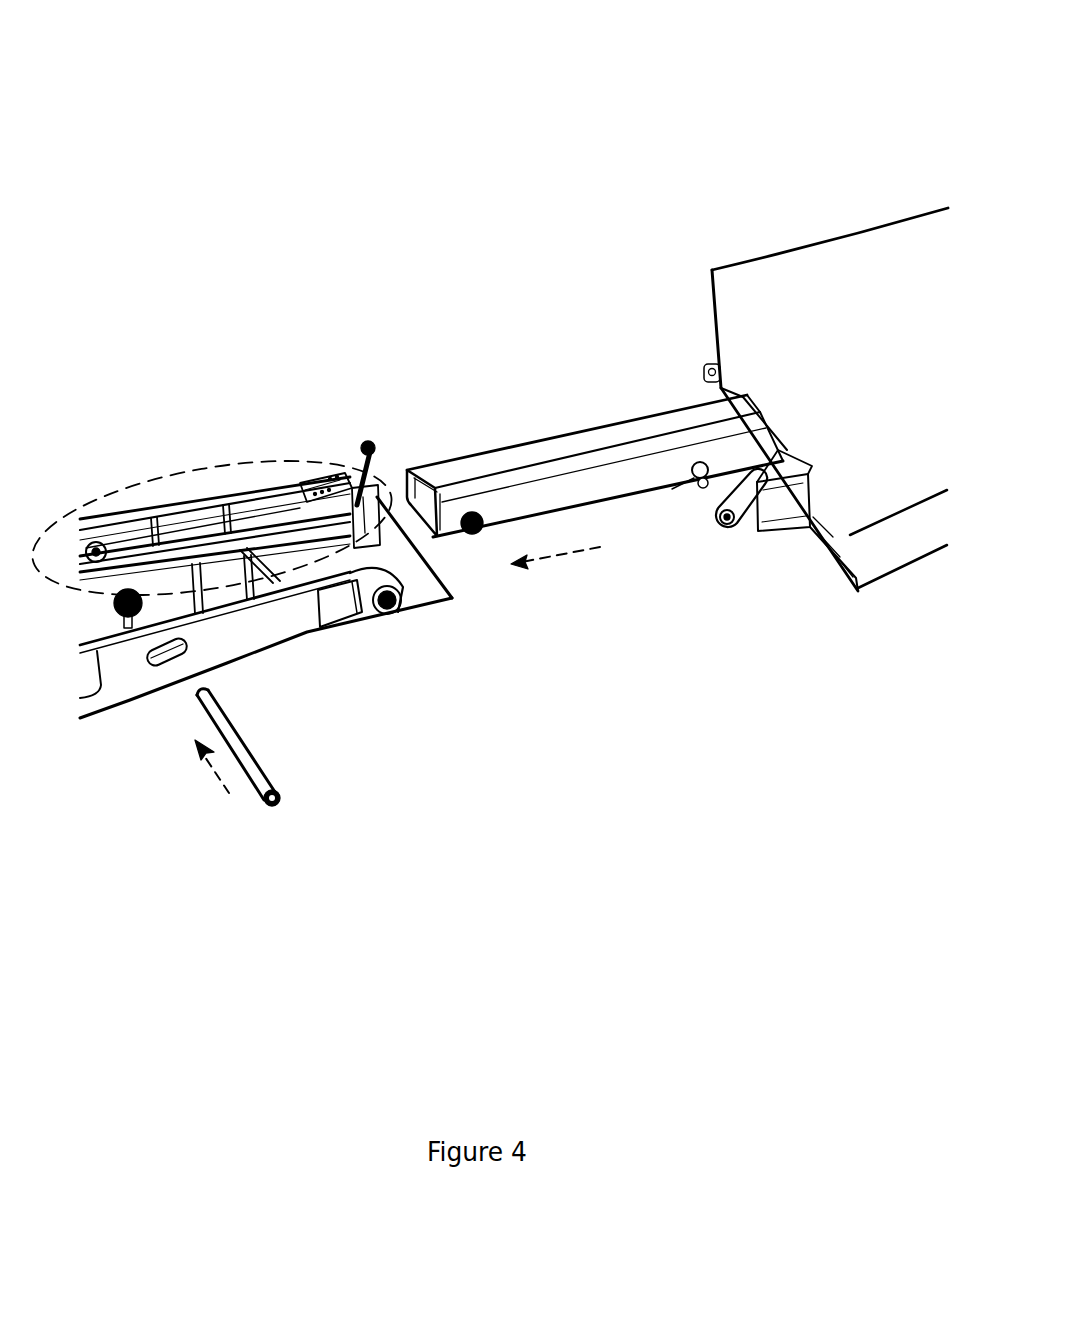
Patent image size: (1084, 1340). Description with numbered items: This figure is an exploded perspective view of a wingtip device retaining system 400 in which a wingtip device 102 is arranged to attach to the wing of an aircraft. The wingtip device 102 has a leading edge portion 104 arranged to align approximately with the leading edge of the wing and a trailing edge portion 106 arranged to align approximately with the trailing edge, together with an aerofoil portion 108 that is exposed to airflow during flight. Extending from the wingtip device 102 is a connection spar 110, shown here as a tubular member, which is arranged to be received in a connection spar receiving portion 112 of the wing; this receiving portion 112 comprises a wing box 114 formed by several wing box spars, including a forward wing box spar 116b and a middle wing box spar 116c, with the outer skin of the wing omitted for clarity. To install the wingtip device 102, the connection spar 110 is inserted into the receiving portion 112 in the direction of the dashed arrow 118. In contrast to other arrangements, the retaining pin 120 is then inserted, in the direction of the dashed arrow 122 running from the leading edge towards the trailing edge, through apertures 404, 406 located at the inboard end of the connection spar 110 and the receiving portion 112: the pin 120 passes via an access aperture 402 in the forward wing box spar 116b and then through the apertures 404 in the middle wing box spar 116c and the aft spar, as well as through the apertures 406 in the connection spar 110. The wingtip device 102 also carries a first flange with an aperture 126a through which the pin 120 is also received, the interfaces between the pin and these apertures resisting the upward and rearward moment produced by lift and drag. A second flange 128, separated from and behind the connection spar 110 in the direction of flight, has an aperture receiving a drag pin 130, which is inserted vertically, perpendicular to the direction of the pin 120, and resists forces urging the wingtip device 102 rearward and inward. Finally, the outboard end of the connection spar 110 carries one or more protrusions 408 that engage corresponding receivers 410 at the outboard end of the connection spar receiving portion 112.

The wingtip device retaining system 400 is at (224, 154).
The wingtip device 102 is at (631, 283).
The leading edge portion 104 is at (888, 598).
The trailing edge portion 106 is at (712, 269).
The aerofoil portion 108 is at (770, 327).
The connection spar 110 is at (517, 444).
The connection spar receiving portion 112 is at (243, 494).
The wing box 114 is at (252, 470).
The forward wing box spar 116b is at (260, 623).
The middle wing box spar 116c is at (152, 605).
The insertion direction arrow 118 is at (560, 558).
The retaining pin 120 is at (262, 763).
The pin insertion direction arrow 122 is at (223, 778).
The aperture 126a is at (712, 526).
The second flange 128 is at (706, 376).
The drag pin 130 is at (372, 446).
The access aperture 402 is at (187, 650).
The apertures 404 is at (100, 542).
The apertures 406 is at (480, 537).
The protrusions 408 is at (694, 485).
The receivers 410 is at (313, 493).